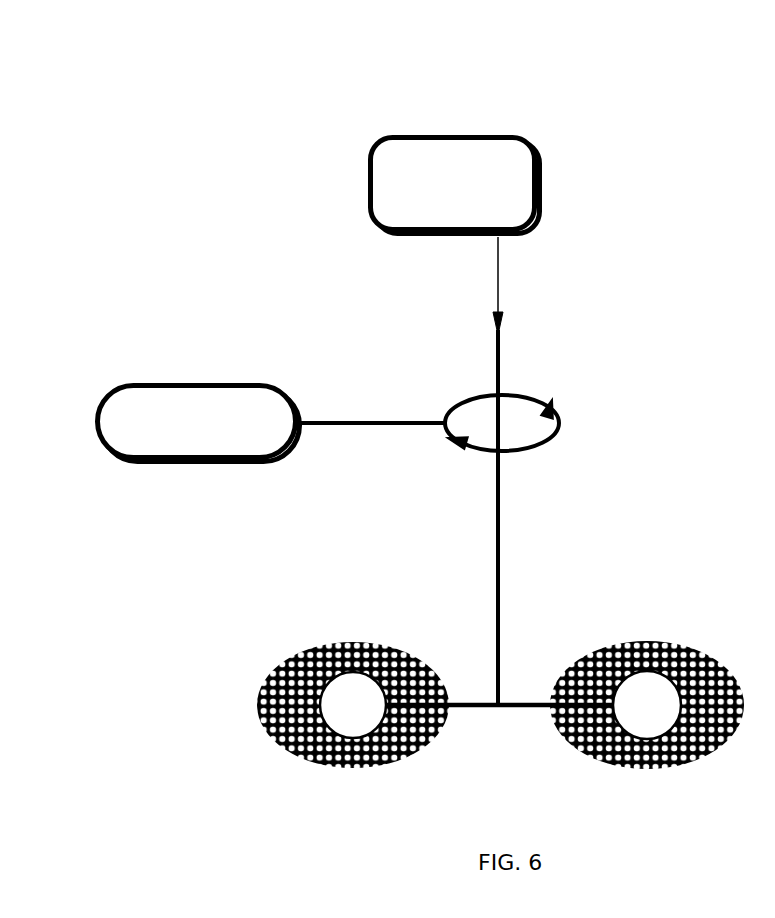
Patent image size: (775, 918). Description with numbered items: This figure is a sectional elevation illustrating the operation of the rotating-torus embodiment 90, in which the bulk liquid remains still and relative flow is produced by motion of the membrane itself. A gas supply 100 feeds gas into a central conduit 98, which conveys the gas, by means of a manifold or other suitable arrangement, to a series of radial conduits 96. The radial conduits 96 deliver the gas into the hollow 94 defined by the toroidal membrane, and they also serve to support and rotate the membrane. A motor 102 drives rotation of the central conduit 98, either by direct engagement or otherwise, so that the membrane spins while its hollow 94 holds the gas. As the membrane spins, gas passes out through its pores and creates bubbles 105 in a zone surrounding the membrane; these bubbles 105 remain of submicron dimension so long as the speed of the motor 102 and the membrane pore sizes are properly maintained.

The embodiment 90 is at (632, 122).
The hollow 94 is at (663, 695).
The radial conduits 96 is at (488, 708).
The central conduit 98 is at (500, 552).
The gas supply 100 is at (368, 178).
The motor 102 is at (184, 383).
The bubbles 105 is at (283, 750).